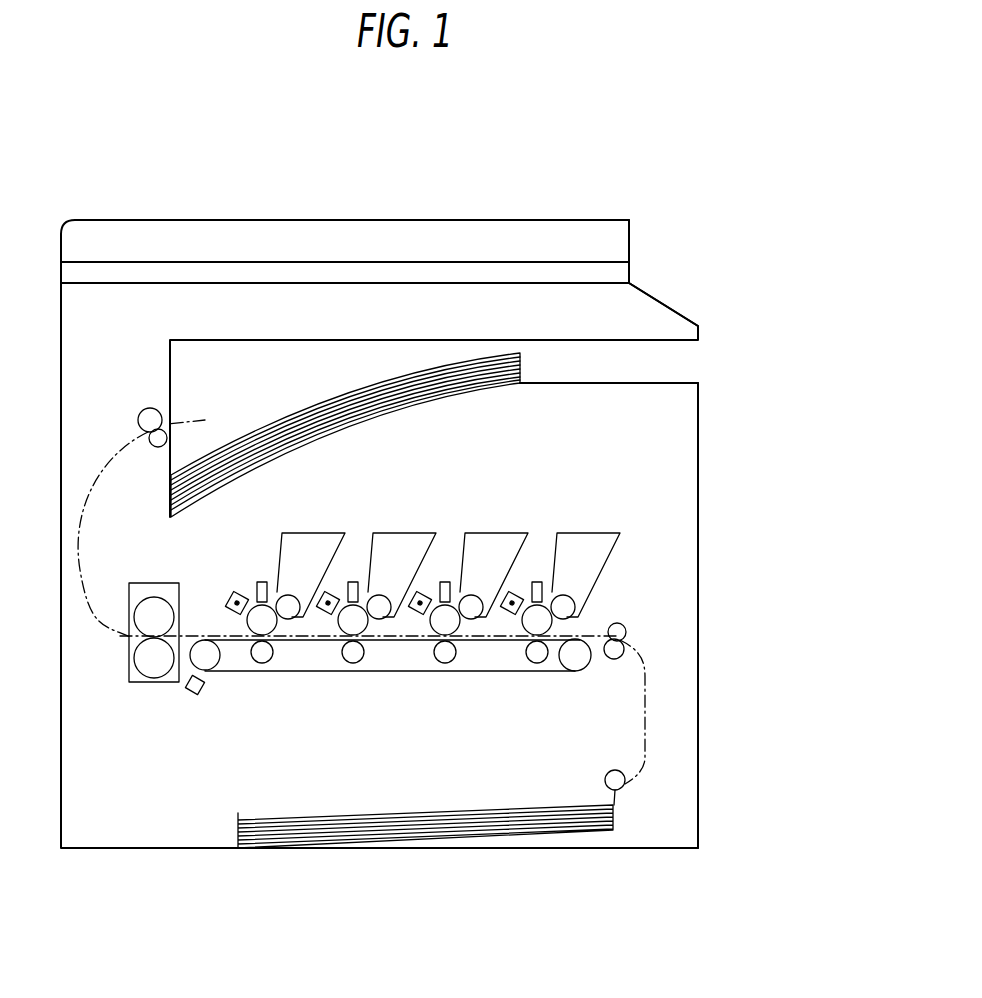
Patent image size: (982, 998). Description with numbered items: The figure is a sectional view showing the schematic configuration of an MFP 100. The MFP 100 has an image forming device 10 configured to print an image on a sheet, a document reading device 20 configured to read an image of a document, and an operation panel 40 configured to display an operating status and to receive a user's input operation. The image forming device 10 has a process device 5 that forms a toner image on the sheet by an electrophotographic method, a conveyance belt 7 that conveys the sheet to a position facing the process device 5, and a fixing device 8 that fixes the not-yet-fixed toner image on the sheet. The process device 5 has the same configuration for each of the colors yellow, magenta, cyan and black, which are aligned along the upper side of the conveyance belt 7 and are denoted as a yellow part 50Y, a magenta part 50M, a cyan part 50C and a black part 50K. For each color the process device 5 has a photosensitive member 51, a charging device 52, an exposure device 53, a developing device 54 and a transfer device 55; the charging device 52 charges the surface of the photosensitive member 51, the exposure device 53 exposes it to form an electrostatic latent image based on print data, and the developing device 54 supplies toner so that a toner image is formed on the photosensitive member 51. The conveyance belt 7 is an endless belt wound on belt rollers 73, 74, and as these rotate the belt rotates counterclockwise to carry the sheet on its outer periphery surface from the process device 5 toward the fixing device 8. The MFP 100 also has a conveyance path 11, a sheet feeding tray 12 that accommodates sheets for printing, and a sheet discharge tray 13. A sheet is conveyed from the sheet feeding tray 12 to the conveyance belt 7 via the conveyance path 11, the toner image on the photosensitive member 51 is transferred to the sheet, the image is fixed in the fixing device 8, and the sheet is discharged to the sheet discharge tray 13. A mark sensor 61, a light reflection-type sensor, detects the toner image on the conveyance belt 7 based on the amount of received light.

The MFP 100 is at (553, 198).
The document reading device 20 is at (143, 218).
The operation panel 40 is at (672, 306).
The image forming device 10 is at (652, 441).
The sheet discharge tray 13 is at (337, 427).
The fixing device 8 is at (128, 650).
The belt roller 74 is at (205, 642).
The mark sensor 61 is at (186, 693).
The conveyance belt 7 is at (234, 672).
The belt roller 73 is at (577, 660).
The process device 5 is at (439, 624).
The yellow part 50Y is at (283, 646).
The magenta part 50M is at (334, 646).
The cyan part 50C is at (426, 646).
The black part 50K is at (570, 606).
The photosensitive member 51 is at (562, 625).
The charging device 52 is at (513, 596).
The exposure device 53 is at (538, 581).
The developing device 54 is at (586, 531).
The transfer device 55 is at (552, 690).
The conveyance path 11 is at (650, 700).
The sheet feeding tray 12 is at (465, 838).